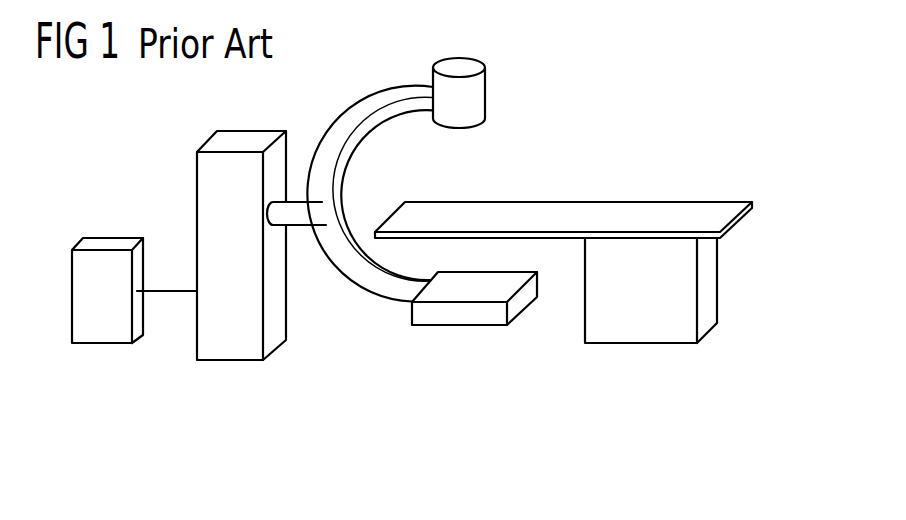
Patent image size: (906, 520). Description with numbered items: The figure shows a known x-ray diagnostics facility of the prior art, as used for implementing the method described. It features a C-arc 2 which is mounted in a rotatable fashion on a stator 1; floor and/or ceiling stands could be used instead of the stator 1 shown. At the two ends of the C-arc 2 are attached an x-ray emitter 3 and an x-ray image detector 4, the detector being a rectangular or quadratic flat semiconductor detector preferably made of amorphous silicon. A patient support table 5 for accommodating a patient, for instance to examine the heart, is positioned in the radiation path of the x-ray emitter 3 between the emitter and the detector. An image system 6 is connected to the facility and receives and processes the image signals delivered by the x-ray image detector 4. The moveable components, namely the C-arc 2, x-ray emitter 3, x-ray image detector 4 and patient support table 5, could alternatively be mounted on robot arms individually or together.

The stator 1 is at (243, 140).
The C-arc 2 is at (368, 110).
The x-ray emitter 3 is at (459, 68).
The x-ray image detector 4 is at (461, 313).
The patient support table 5 is at (705, 278).
The image system 6 is at (72, 297).